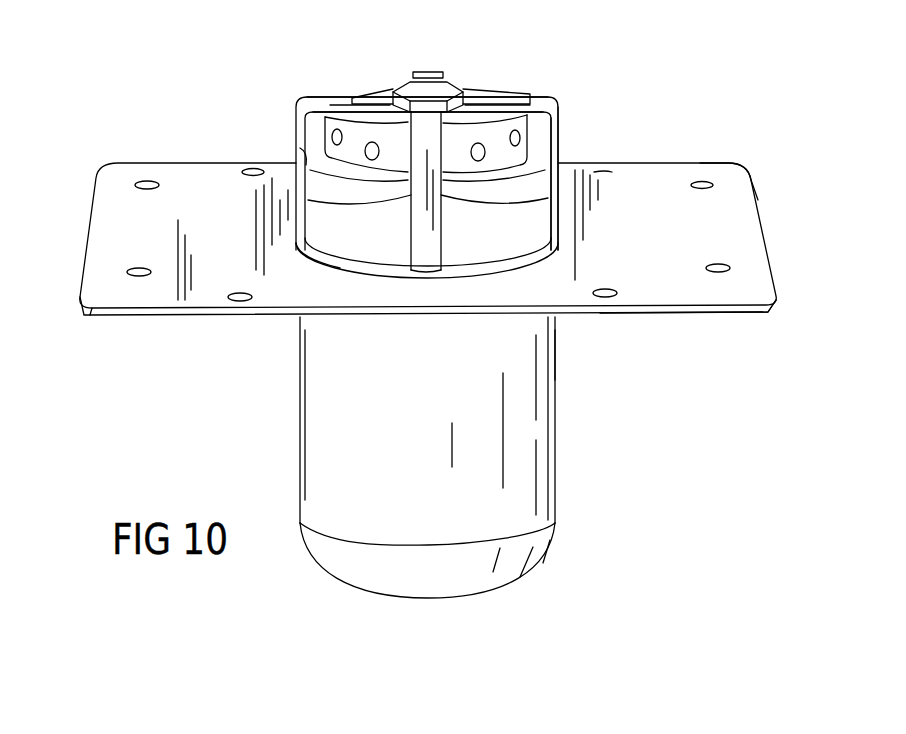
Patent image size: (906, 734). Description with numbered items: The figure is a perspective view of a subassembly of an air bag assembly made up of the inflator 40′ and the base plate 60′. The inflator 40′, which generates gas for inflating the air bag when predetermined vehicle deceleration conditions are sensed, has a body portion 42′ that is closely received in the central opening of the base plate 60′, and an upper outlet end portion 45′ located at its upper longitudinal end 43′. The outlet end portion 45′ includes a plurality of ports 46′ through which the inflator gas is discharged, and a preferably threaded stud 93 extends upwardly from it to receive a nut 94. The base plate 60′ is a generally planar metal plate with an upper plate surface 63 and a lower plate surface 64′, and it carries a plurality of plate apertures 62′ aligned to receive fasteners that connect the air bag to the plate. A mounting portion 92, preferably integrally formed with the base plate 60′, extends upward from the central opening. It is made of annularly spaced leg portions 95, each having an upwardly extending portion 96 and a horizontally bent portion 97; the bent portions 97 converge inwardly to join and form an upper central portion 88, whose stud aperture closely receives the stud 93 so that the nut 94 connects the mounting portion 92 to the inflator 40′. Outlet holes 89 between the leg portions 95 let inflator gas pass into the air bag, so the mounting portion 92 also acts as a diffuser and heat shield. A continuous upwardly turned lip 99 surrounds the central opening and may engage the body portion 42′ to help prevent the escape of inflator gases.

The inflator 40′ is at (558, 408).
The body portion 42′ is at (545, 457).
The upper longitudinal end 43′ is at (365, 107).
The upper outlet end portion 45′ is at (527, 127).
The ports 46′ is at (370, 160).
The base plate 60′ is at (97, 314).
The plate apertures 62′ is at (260, 172).
The upper plate surface 63 is at (668, 202).
The lower plate surface 64′ is at (753, 317).
The upper central portion 88 is at (382, 110).
The outlet holes 89 is at (553, 327).
The mounting portion 92 is at (557, 100).
The stud 93 is at (450, 80).
The nut 94 is at (465, 90).
The leg portions 95 is at (300, 97).
The upwardly extending portions 96 is at (297, 125).
The horizontally bent portions 97 is at (320, 100).
The lip 99 is at (332, 260).